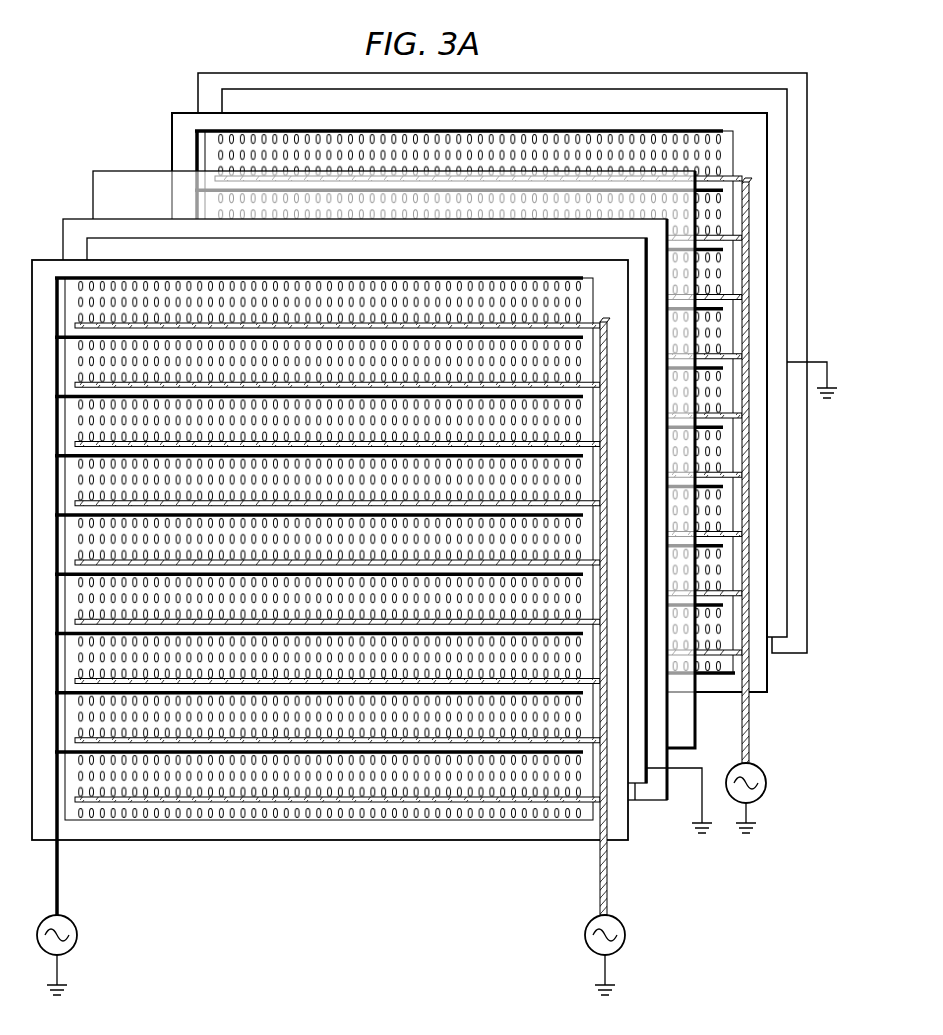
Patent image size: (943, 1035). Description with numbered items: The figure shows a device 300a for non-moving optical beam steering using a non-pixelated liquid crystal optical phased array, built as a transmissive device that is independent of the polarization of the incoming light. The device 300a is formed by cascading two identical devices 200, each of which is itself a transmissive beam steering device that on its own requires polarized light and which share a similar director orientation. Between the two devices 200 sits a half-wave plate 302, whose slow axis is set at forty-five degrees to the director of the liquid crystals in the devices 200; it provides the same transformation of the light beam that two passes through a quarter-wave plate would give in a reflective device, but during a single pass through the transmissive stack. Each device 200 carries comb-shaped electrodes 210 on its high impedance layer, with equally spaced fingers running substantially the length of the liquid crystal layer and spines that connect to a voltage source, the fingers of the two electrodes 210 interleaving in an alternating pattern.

The device 300a is at (146, 67).
The half-wave plate 302 is at (138, 171).
The device 200 is at (757, 698).
The electrodes 210 is at (617, 846).